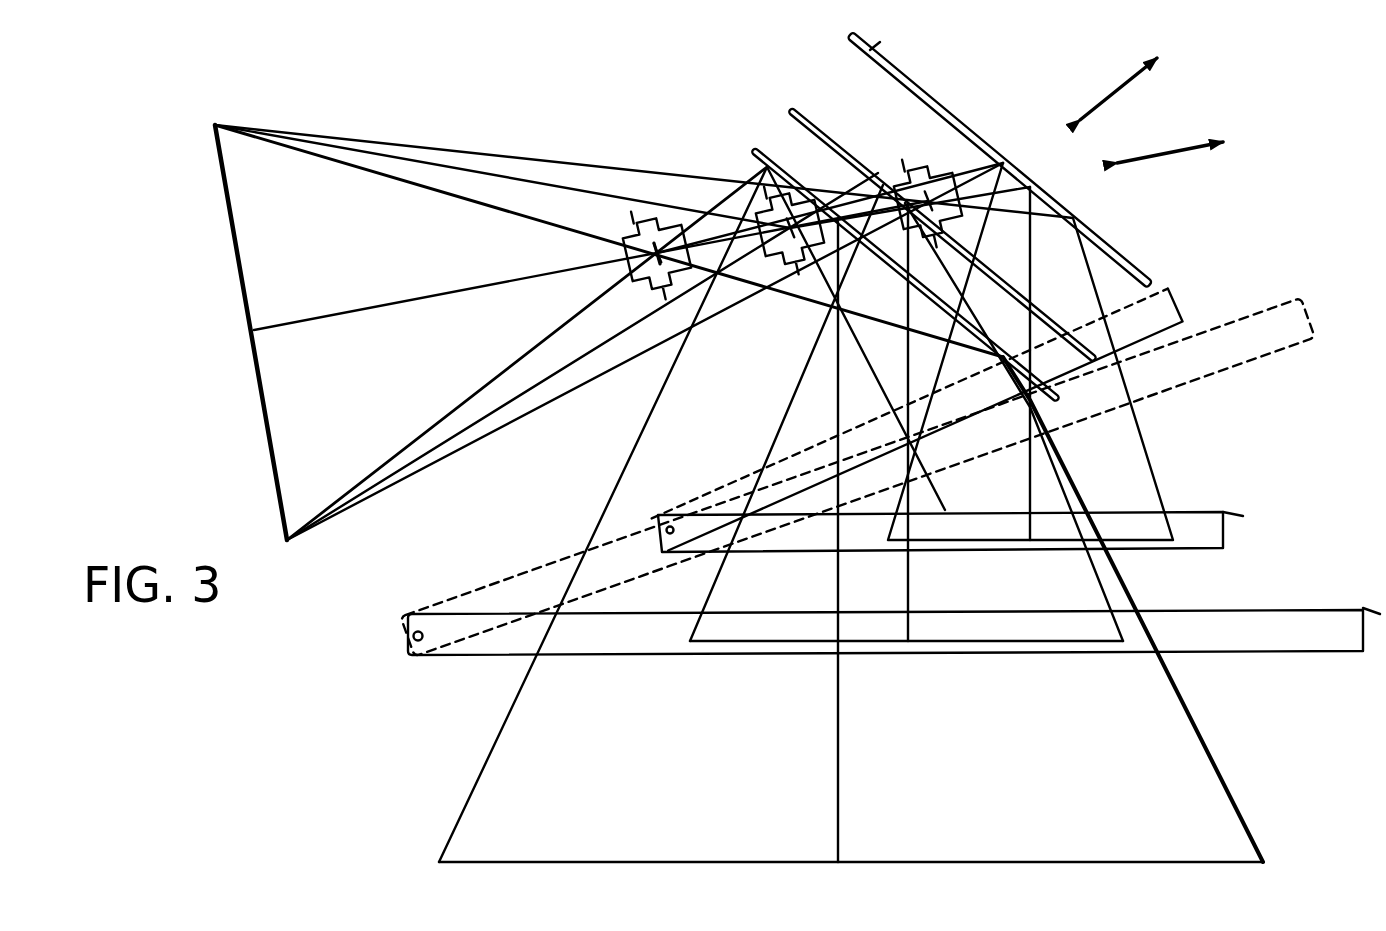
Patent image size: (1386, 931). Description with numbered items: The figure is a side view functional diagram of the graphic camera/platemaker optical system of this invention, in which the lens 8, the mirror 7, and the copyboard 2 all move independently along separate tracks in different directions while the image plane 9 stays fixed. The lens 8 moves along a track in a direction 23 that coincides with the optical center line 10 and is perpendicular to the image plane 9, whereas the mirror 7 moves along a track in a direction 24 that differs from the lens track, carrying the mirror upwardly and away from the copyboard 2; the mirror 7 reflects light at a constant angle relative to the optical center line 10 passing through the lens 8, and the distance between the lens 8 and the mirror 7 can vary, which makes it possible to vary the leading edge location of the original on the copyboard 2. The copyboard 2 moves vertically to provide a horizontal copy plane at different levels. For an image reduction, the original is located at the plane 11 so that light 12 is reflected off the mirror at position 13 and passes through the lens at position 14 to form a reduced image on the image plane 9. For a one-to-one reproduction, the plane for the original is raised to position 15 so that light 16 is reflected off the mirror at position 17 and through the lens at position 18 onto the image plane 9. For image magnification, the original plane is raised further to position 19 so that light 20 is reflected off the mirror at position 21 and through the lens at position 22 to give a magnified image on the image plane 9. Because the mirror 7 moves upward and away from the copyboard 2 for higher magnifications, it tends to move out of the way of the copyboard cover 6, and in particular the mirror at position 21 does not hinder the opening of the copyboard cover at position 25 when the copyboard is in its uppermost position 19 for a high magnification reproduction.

The copyboard 2 is at (1300, 620).
The copyboard cover 6 is at (1262, 353).
The mirror 7 is at (938, 100).
The lens 8 is at (662, 215).
The image plane 9 is at (229, 222).
The optical center line 10 is at (313, 316).
The plane 11 is at (1048, 862).
The light 12 is at (491, 753).
The position 13 is at (757, 118).
The position 14 is at (625, 234).
The position 15 is at (990, 648).
The light 16 is at (720, 570).
The position 17 is at (793, 108).
The position 18 is at (787, 263).
The position 19 is at (1158, 553).
The light 20 is at (900, 497).
The position 21 is at (890, 31).
The position 22 is at (938, 170).
The direction 23 is at (1162, 153).
The direction 24 is at (1116, 92).
The copyboard cover 25 is at (1166, 296).